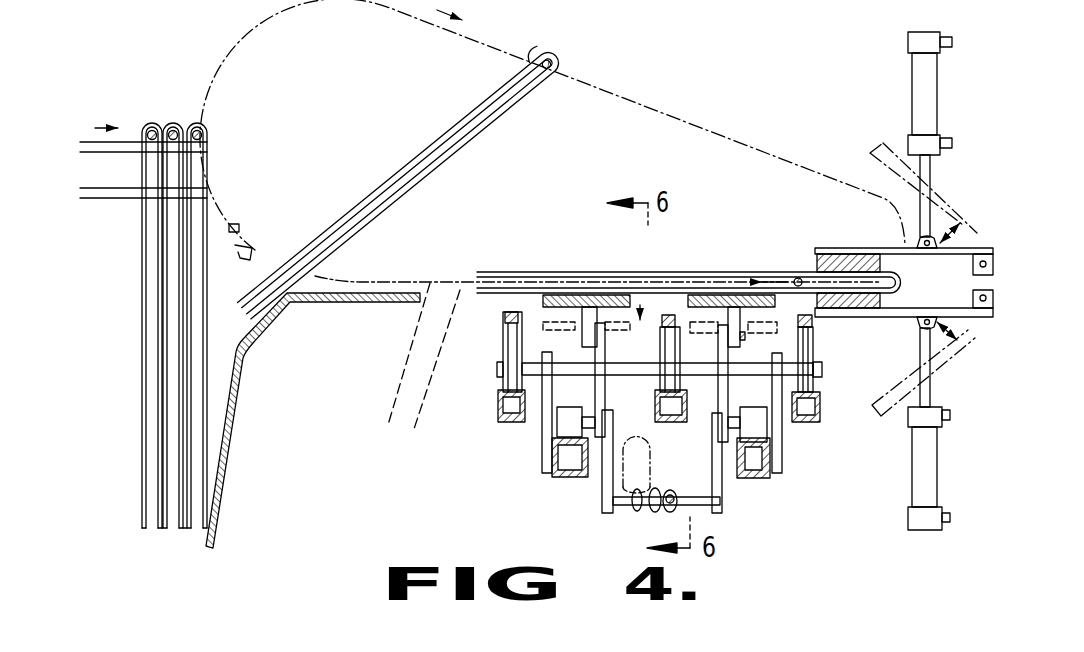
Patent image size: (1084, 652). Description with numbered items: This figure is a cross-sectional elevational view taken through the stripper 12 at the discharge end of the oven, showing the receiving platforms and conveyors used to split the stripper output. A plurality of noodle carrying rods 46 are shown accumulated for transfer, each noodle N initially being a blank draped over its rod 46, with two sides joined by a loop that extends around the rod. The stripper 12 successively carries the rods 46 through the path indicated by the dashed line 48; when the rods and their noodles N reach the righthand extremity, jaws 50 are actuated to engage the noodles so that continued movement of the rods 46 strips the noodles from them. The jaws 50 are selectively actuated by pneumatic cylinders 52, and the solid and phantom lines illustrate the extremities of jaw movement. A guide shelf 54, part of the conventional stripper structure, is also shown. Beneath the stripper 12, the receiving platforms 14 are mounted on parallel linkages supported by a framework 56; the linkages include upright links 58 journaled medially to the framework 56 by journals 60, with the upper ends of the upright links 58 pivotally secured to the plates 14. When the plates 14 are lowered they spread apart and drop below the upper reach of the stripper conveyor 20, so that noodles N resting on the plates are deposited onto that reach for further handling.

The stripper 12 is at (730, 101).
The receiving platforms 14 is at (568, 296).
The stripper conveyor 20 is at (507, 313).
The noodle carrying rods 46 is at (196, 126).
The path 48 is at (642, 98).
The jaws 50 is at (863, 253).
The pneumatic cylinders 52 is at (935, 97).
The guide shelf 54 is at (262, 332).
The framework 56 is at (560, 477).
The upright links 58 is at (606, 395).
The journals 60 is at (562, 424).
The noodles N is at (163, 367).